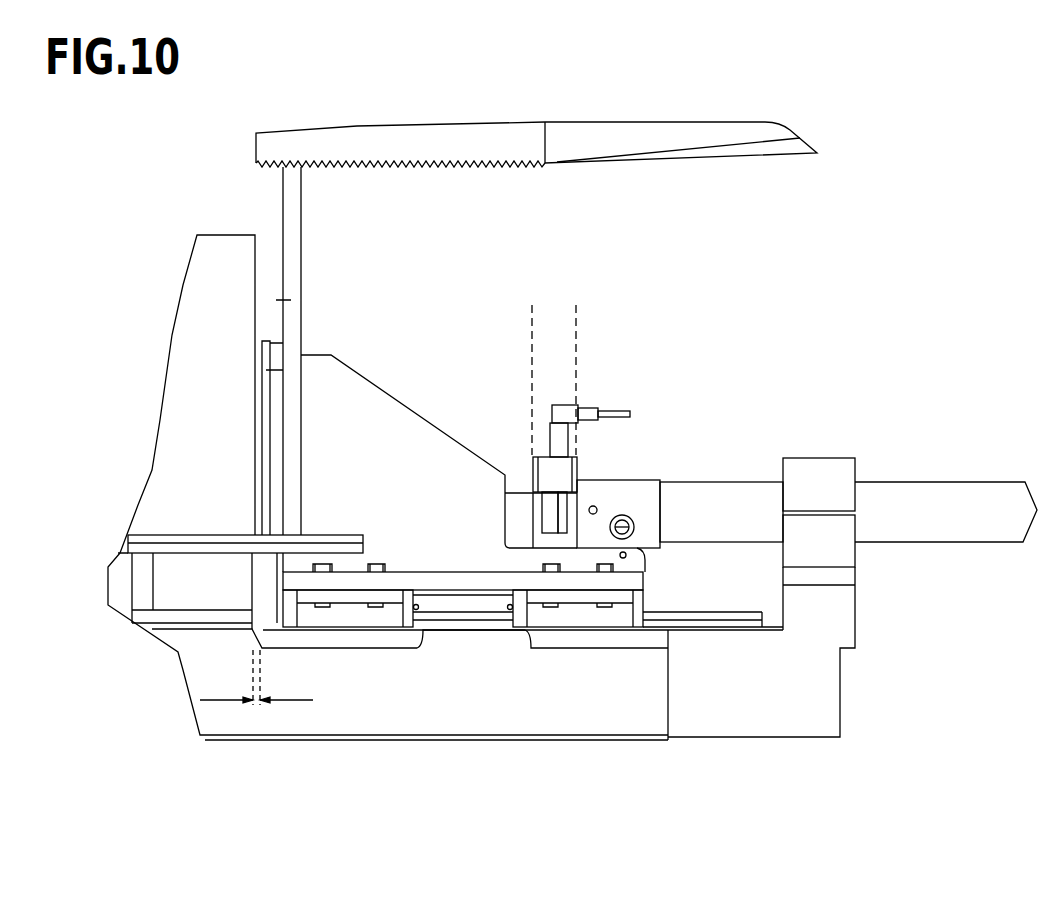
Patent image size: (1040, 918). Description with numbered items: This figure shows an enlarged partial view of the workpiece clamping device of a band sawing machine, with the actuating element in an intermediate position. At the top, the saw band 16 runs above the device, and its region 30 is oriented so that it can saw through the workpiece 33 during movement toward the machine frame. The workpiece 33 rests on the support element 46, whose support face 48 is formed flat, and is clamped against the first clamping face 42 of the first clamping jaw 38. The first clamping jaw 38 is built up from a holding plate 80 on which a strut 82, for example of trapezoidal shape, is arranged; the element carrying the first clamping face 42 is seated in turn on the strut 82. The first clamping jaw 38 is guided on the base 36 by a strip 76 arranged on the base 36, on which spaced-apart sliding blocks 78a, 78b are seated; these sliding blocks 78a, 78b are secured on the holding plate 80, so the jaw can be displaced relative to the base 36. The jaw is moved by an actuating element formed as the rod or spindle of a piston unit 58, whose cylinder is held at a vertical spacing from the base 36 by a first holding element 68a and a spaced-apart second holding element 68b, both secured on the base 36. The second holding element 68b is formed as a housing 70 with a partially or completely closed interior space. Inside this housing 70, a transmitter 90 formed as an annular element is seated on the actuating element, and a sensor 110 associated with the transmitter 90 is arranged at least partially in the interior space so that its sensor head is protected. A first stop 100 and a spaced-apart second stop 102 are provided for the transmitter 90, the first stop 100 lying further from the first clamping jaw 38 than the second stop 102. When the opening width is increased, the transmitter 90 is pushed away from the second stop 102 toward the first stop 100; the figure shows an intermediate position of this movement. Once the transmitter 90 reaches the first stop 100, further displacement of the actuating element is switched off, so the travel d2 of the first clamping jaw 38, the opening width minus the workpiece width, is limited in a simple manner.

The saw band 16 is at (726, 150).
The region of the saw band 30 is at (440, 142).
The workpiece 33 is at (228, 250).
The base 36 is at (810, 717).
The first clamping jaw 38 is at (283, 370).
The first clamping face 42 is at (262, 443).
The support element 46 is at (173, 545).
The support face 48 is at (165, 540).
The piston unit 58 is at (934, 492).
The first holding element 68a is at (835, 475).
The second holding element 68b is at (563, 473).
The housing 70 is at (533, 480).
The strip 76 is at (722, 617).
The sliding block 78a is at (358, 617).
The sliding block 78b is at (583, 617).
The holding plate 80 is at (418, 575).
The strut 82 is at (362, 410).
The transmitter 90 is at (552, 500).
The first stop 100 is at (597, 493).
The second stop 102 is at (505, 498).
The sensor 110 is at (562, 450).
The travel d2 is at (258, 706).